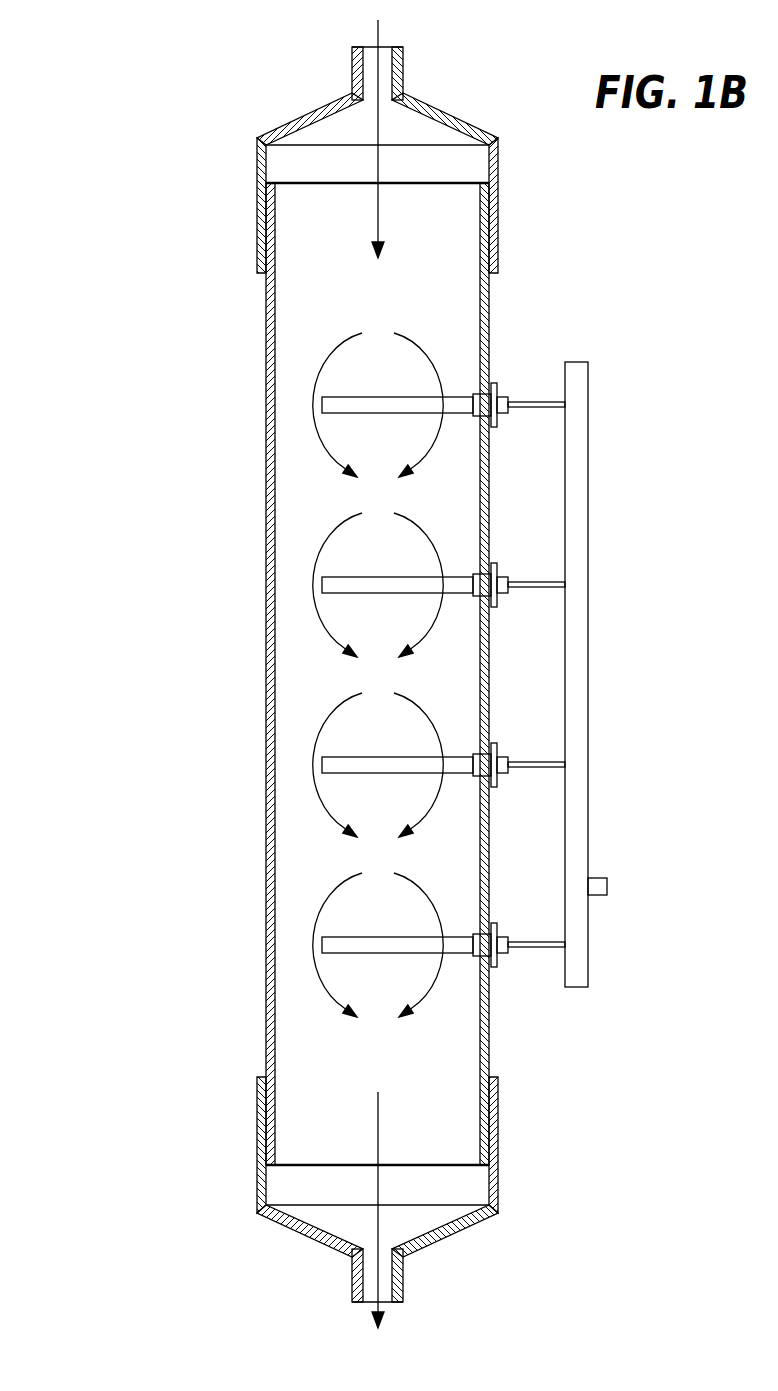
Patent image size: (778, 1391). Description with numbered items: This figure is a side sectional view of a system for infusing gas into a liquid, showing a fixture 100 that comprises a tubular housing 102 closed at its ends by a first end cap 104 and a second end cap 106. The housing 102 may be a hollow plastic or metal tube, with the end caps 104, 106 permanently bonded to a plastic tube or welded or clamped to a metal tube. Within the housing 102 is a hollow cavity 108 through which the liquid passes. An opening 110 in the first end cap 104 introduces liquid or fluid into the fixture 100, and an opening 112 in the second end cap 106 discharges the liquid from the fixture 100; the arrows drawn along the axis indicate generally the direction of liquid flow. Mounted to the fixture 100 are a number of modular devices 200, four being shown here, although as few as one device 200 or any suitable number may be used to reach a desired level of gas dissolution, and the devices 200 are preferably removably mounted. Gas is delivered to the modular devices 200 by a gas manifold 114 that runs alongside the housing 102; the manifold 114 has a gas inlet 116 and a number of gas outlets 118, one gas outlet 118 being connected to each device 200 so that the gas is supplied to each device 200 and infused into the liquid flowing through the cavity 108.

The fixture 100 is at (136, 117).
The housing 102 is at (266, 405).
The first end cap 104 is at (257, 208).
The second end cap 106 is at (257, 1145).
The hollow cavity 108 is at (456, 233).
The opening 110 is at (383, 47).
The opening 112 is at (368, 1303).
The gas manifold 114 is at (589, 470).
The gas inlet 116 is at (610, 887).
The gas outlets 118 is at (538, 408).
The modular devices 200 is at (458, 413).